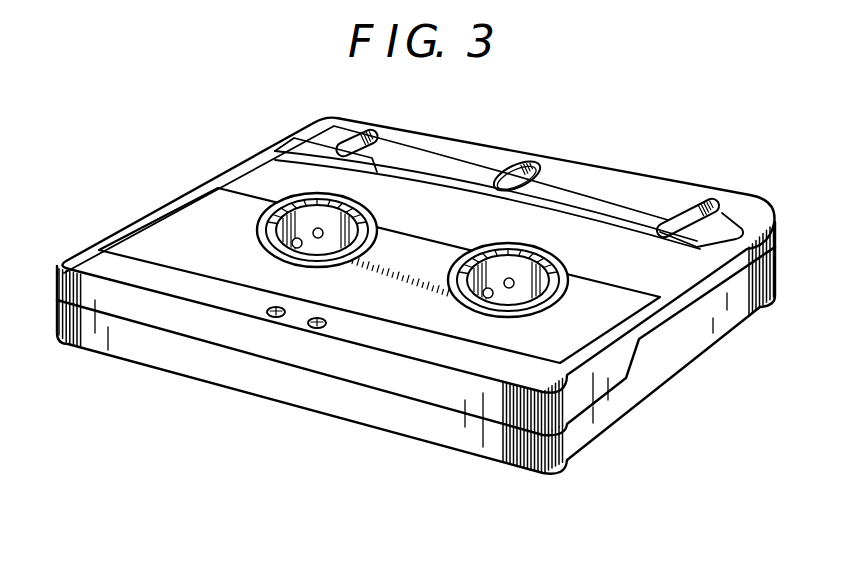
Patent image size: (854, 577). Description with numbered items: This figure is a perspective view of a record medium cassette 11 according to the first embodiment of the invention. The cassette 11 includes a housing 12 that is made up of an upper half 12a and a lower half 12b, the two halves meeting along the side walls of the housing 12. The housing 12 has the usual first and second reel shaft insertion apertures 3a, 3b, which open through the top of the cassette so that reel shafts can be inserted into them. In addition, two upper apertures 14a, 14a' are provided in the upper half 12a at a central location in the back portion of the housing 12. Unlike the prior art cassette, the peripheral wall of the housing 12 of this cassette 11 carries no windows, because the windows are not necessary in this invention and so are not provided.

The cassette 11 is at (590, 126).
The housing 12 is at (476, 492).
The upper half 12a is at (421, 397).
The lower half 12b is at (463, 440).
The first reel shaft insertion aperture 3a is at (337, 226).
The second reel shaft insertion aperture 3b is at (521, 270).
The upper aperture 14a is at (261, 287).
The upper aperture 14a' is at (353, 305).